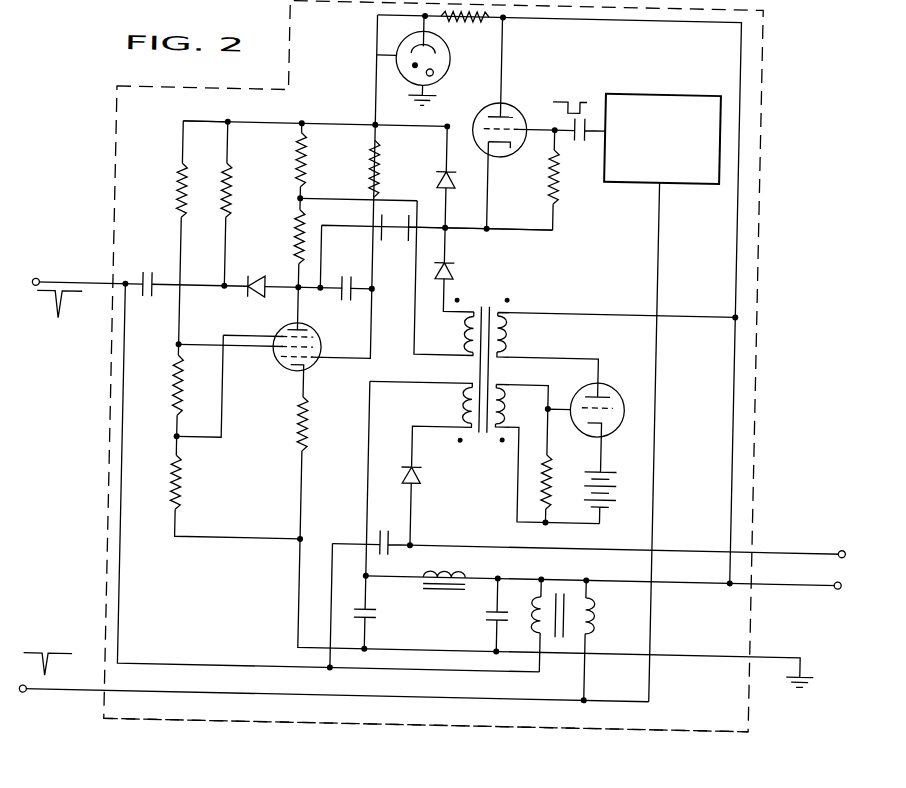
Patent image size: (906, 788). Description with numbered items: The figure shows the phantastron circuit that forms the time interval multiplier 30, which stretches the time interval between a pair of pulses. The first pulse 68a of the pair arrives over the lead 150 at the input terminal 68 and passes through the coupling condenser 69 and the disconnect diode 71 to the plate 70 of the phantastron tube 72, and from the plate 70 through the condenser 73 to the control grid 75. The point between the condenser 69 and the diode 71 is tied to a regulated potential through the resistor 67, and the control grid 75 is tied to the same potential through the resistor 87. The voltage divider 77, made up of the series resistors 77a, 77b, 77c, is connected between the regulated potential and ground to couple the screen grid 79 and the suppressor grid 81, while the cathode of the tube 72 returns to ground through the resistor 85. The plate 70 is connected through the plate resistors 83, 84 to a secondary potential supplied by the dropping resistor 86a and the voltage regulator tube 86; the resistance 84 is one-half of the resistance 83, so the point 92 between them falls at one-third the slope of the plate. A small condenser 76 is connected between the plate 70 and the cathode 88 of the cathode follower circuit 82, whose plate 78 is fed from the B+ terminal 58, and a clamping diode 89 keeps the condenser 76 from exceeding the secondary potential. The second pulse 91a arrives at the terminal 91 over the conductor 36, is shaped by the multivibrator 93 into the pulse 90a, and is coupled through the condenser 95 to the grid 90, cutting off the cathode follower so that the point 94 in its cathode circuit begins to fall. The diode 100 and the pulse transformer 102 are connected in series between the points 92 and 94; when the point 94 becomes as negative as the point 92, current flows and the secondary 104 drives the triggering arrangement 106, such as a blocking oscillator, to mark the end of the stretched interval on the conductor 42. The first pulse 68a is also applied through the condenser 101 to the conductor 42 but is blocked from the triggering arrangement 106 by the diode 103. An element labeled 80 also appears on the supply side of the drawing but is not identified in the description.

The lead 150 is at (112, 269).
The time interval multiplier 30 is at (667, 728).
The input terminal 68 is at (34, 287).
The pulse 68a is at (58, 321).
The coupling condenser 69 is at (154, 271).
The voltage divider 77 is at (136, 212).
The series resistor 77a is at (184, 216).
The resistor 67 is at (228, 216).
The plate resistor 84 is at (293, 173).
The point 92 is at (298, 201).
The plate resistor 83 is at (292, 241).
The disconnect diode 71 is at (252, 282).
The condenser 73 is at (332, 278).
The condenser 76 is at (388, 245).
The plate 70 is at (284, 336).
The suppressor grid 81 is at (278, 336).
The screen grid 79 is at (274, 356).
The control grid 75 is at (307, 358).
The phantastron tube 72 is at (314, 371).
The series resistor 77b is at (183, 398).
The series resistor 77c is at (184, 500).
The resistor 85 is at (308, 425).
The voltage regulator tube 86 is at (370, 56).
The dropping resistor 86a is at (445, 18).
The resistor 87 is at (373, 160).
The cathode 88 is at (485, 149).
The clamping diode 89 is at (432, 178).
The cathode follower circuit 82 is at (523, 199).
The plate 78 is at (491, 106).
The grid 90 is at (502, 127).
The pulse 90a is at (542, 80).
The coupling condenser 95 is at (563, 146).
The multivibrator 93 is at (674, 90).
The point 94 is at (444, 232).
The diode 100 is at (452, 272).
The pulse transformer 102 is at (457, 340).
The secondary 104 is at (502, 389).
The triggering arrangement 106 is at (595, 463).
The diode 103 is at (424, 470).
The condenser 101 is at (395, 541).
The conductor 42 is at (783, 546).
The terminal 58 is at (774, 582).
The filter network 80 is at (415, 623).
The conductor 36 is at (346, 700).
The terminal 91 is at (31, 701).
The pulse 91a is at (60, 679).